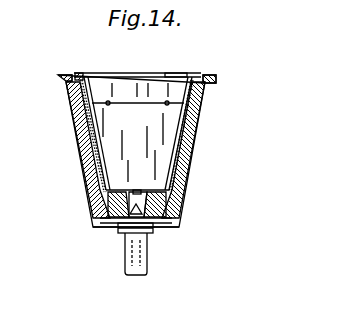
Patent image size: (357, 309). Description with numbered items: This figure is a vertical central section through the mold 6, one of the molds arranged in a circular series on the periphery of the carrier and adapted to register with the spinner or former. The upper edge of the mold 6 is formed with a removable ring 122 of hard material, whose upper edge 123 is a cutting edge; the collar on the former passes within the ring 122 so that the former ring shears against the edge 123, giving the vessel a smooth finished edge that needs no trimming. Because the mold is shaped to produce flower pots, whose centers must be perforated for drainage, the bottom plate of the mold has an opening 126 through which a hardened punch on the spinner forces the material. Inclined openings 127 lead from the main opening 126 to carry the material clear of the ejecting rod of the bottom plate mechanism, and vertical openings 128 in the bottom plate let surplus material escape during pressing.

The removable ring 122 is at (204, 75).
The upper edge 123 is at (78, 74).
The mold 6 is at (198, 138).
The opening 126 is at (186, 174).
The vertical openings 128 is at (104, 211).
The inclined openings 127 is at (155, 222).